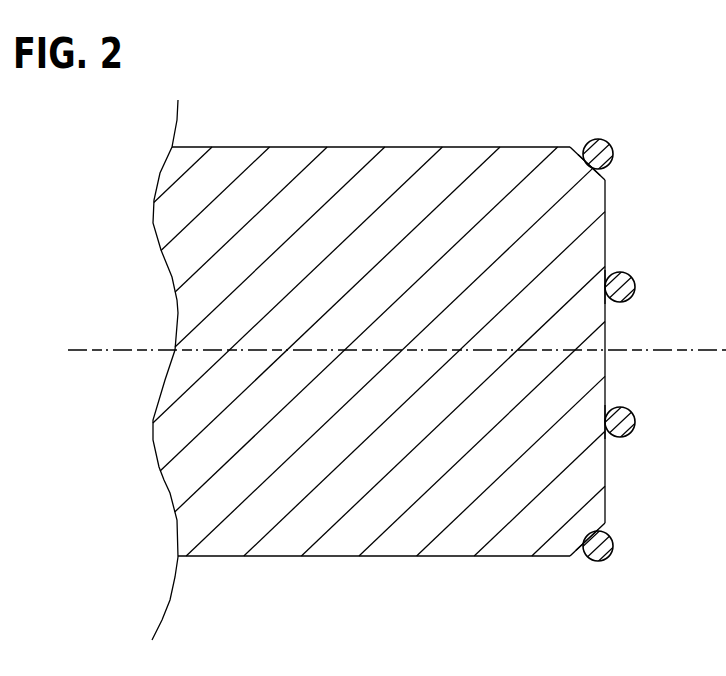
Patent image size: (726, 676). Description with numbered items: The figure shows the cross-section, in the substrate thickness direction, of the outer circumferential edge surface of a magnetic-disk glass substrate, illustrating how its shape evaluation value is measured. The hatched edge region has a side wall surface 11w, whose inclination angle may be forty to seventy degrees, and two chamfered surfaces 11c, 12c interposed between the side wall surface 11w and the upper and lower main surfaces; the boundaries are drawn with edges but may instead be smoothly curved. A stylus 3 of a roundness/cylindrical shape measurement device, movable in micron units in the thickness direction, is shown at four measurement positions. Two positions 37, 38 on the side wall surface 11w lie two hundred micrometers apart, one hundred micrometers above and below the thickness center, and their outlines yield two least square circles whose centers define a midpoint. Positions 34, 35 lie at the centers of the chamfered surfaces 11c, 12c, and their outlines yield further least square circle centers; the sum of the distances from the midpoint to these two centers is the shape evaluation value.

The stylus 3 is at (613, 152).
The chamfered surface 11c is at (606, 180).
The side wall surface 11w is at (606, 233).
The chamfered surface 12c is at (606, 524).
The measurement position 34 is at (590, 171).
The measurement position 35 is at (586, 540).
The measurement position 37 is at (604, 284).
The measurement position 38 is at (604, 421).